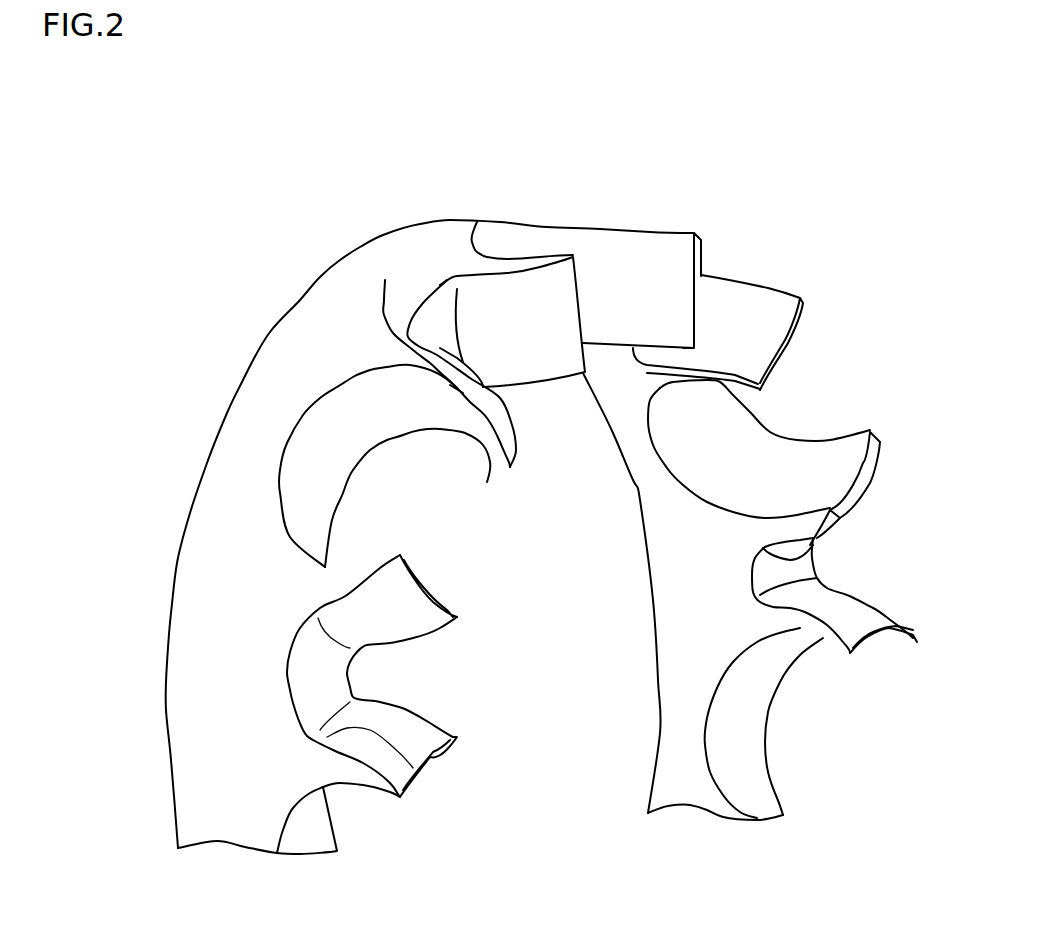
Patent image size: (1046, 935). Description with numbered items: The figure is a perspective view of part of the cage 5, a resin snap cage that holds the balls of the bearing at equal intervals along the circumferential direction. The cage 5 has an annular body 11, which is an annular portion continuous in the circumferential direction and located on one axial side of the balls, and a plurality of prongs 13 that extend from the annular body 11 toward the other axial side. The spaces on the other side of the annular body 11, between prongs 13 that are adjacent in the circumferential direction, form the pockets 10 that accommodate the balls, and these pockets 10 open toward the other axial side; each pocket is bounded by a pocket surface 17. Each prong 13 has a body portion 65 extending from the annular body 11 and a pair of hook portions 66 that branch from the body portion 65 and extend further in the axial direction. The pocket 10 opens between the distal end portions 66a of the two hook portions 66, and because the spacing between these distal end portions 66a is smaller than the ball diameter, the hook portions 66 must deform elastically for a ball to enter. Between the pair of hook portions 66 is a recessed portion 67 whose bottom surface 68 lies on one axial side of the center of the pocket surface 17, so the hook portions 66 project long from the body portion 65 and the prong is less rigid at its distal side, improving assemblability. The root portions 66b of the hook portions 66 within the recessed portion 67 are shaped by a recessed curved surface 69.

The cage 5 is at (309, 261).
The pocket 10 is at (559, 214).
The annular body 11 is at (257, 423).
The prong 13 is at (478, 165).
The pocket surface 17 is at (640, 277).
The body portion 65 is at (416, 280).
The hook portion 66 is at (385, 280).
The distal end portion 66a is at (420, 587).
The root portion 66b is at (313, 610).
The recessed portion 67 is at (398, 674).
The bottom surface 68 is at (320, 675).
The recessed curved surface 69 is at (317, 615).